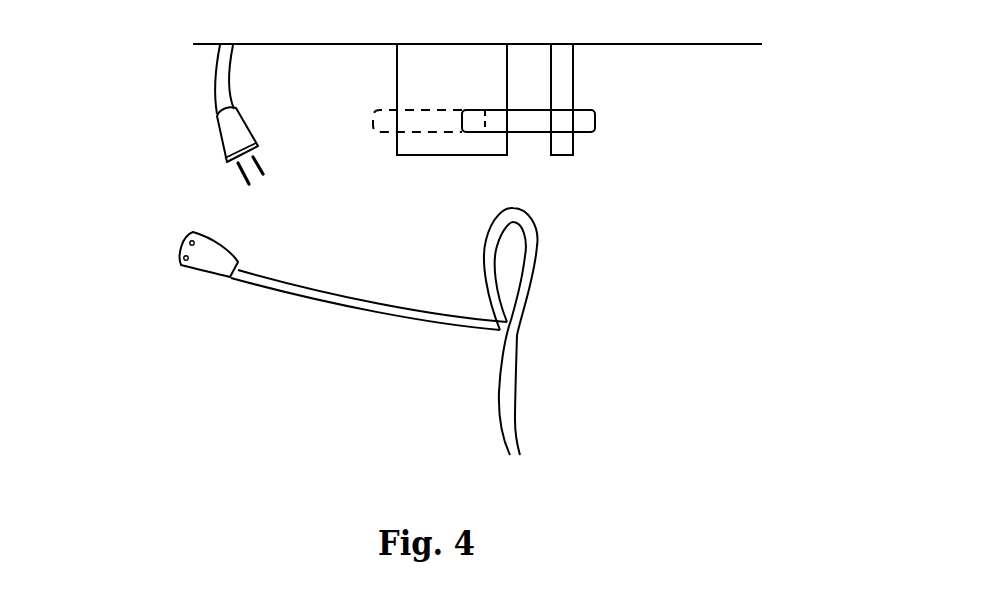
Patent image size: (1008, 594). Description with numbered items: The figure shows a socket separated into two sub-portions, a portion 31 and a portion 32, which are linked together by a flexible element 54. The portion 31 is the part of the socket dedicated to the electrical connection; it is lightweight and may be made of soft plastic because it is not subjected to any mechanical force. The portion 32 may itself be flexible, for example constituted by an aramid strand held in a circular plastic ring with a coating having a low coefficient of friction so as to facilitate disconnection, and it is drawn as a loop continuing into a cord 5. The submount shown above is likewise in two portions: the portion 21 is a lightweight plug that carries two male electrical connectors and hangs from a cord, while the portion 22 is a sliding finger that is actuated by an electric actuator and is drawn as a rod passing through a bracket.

The lightweight plug 21 is at (218, 133).
The sliding finger 22 is at (596, 120).
The socket portion dedicated to the electrical connection 31 is at (178, 257).
The flexible socket portion 32 is at (538, 242).
The flexible element 54 is at (305, 298).
The cord 5 is at (514, 398).